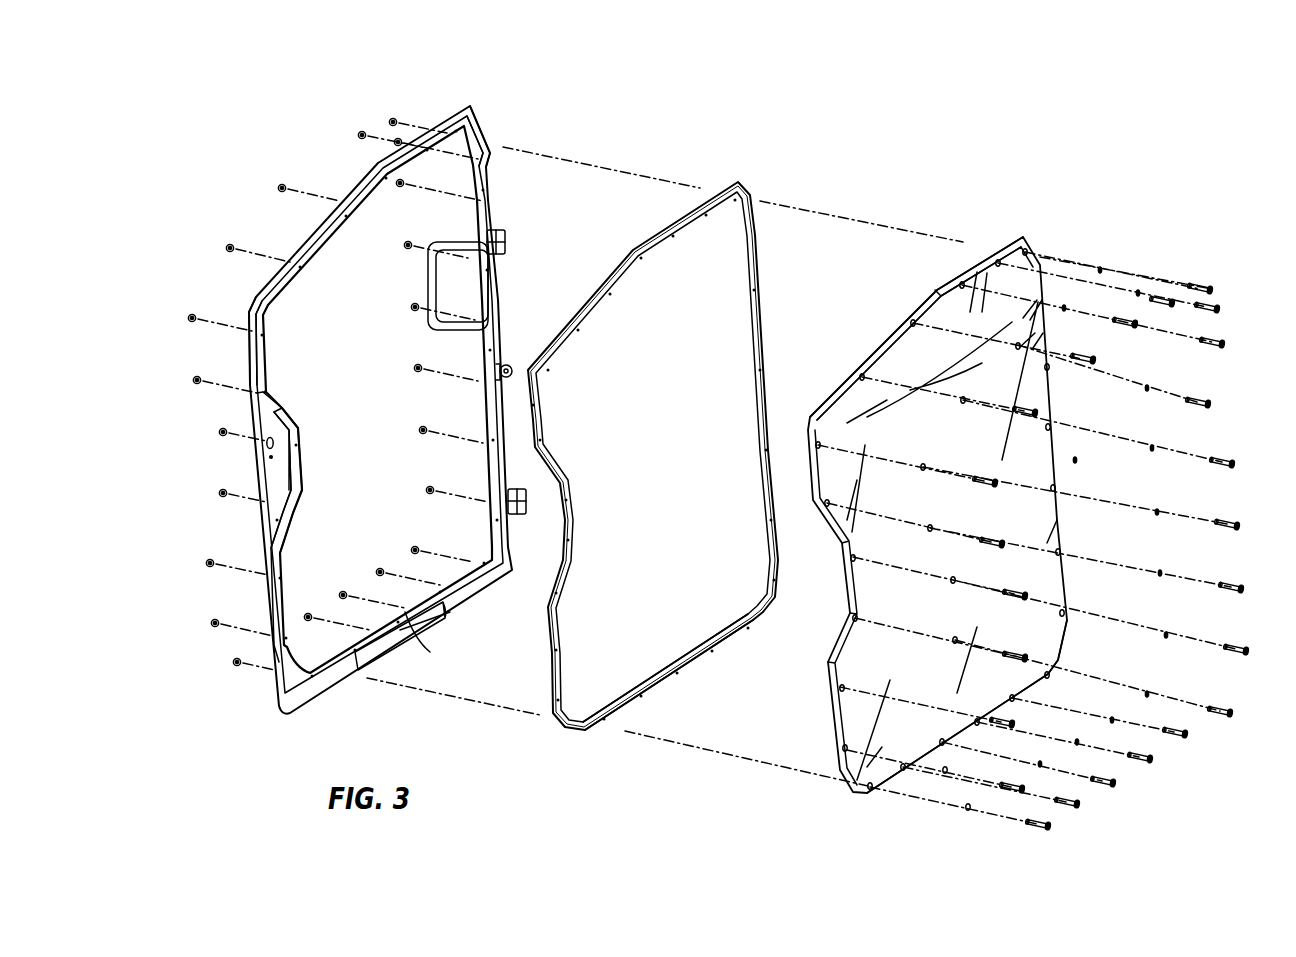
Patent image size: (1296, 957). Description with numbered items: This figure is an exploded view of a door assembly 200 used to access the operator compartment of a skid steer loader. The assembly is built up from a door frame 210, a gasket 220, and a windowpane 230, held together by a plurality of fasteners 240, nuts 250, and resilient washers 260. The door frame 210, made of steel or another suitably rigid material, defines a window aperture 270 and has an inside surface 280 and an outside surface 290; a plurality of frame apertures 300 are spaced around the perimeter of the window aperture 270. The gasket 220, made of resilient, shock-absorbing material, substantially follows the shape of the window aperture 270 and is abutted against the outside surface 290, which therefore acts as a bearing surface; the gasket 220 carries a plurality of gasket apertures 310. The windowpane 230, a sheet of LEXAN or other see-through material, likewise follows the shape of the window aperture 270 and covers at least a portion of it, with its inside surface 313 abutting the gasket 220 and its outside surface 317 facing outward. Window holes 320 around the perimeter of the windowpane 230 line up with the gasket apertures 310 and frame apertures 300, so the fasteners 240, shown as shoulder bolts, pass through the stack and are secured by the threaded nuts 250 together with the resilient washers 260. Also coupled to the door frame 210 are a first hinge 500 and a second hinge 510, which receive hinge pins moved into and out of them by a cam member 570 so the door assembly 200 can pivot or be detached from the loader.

The door assembly 200 is at (760, 116).
The door frame 210 is at (274, 715).
The gasket 220 is at (566, 746).
The windowpane 230 is at (836, 797).
The fasteners 240 is at (1210, 300).
The nuts 250 is at (326, 149).
The resilient washers 260 is at (1130, 274).
The window aperture 270 is at (282, 364).
The inside surface 280 is at (251, 312).
The outside surface 290 is at (481, 138).
The frame apertures 300 is at (400, 630).
The gasket apertures 310 is at (667, 684).
The inside surface 313 is at (846, 360).
The outside surface 317 is at (990, 449).
The window holes 320 is at (966, 745).
The first hinge 500 is at (508, 241).
The second hinge 510 is at (527, 510).
The cam member 570 is at (509, 366).